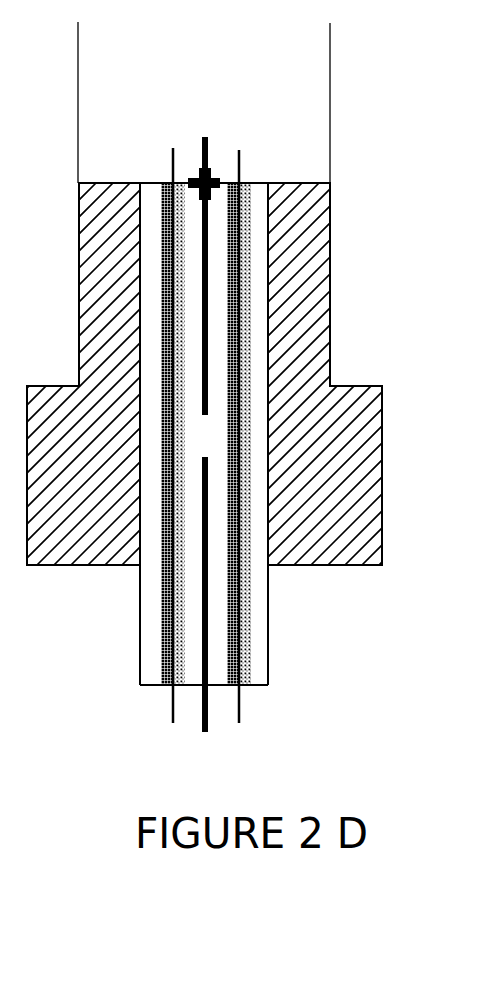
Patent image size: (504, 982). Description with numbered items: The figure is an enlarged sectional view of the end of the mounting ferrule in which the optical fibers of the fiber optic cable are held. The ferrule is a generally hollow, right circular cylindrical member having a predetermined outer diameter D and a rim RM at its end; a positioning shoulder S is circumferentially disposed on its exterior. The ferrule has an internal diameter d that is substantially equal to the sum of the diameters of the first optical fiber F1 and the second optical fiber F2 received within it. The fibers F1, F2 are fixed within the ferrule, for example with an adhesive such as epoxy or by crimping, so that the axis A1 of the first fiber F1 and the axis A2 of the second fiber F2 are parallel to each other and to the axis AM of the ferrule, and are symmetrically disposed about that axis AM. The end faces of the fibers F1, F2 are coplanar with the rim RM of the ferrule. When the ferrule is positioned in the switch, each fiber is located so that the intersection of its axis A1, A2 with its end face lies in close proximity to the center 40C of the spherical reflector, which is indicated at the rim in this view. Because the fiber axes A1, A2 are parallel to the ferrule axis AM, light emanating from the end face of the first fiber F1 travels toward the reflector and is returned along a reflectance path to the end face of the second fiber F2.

The positioning shoulder S is at (55, 386).
The rim RM is at (114, 183).
The first optical fiber F1 is at (147, 686).
The second optical fiber F2 is at (258, 686).
The axis of first optical fiber A1 is at (170, 167).
The axis of second optical fiber A2 is at (242, 167).
The axis of the ferrule AM is at (201, 151).
The center of the spherical reflector 40C is at (212, 175).
The outer diameter D is at (330, 32).
The internal diameter d is at (268, 435).